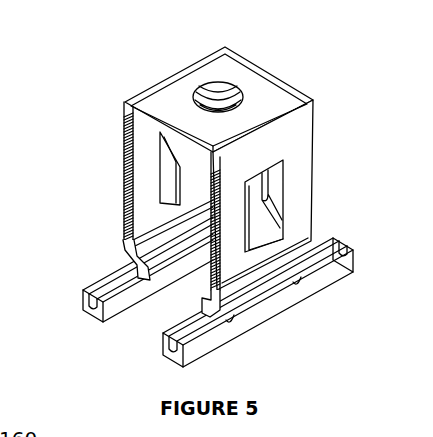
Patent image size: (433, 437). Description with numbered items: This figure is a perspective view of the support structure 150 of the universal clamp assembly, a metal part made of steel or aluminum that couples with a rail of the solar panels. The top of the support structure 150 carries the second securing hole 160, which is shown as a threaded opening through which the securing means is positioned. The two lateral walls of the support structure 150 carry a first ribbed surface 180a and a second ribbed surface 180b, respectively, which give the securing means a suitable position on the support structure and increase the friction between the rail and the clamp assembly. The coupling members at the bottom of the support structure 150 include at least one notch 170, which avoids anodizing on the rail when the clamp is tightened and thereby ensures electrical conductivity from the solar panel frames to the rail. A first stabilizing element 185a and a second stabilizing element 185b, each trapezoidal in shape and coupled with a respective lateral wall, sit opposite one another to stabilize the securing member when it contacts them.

The support structure 150 is at (98, 125).
The second securing hole 160 is at (218, 101).
The notch 170 is at (300, 272).
The first ribbed surface 180a is at (128, 207).
The second ribbed surface 180b is at (222, 247).
The first stabilizing element 185a is at (180, 167).
The second stabilizing element 185b is at (267, 210).